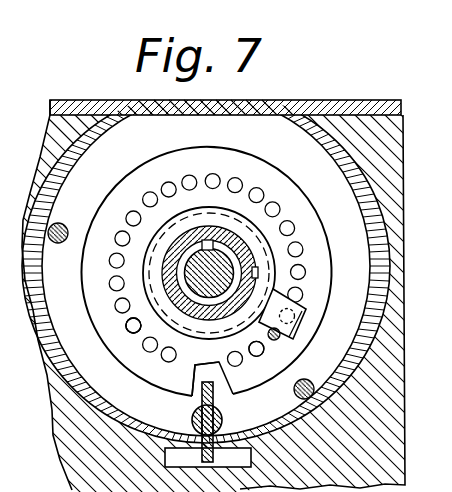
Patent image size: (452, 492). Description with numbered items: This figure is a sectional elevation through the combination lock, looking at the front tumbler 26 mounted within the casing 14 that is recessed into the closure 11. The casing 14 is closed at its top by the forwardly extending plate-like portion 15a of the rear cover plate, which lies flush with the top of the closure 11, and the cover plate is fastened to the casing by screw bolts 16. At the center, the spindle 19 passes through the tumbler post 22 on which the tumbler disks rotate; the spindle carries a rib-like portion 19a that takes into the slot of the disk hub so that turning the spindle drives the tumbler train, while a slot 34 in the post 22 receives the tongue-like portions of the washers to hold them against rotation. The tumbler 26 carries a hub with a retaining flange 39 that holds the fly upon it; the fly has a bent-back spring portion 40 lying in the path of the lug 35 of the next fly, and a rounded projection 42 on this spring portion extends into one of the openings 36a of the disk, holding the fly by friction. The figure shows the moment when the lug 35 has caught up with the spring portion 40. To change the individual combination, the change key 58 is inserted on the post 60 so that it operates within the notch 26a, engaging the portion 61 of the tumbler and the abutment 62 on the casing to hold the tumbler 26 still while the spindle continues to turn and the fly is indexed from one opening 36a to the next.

The closure 11 is at (53, 132).
The casing 14 is at (329, 147).
The plate-like portion 15a is at (299, 117).
The screw bolts 16 is at (60, 224).
The spindle 19 is at (197, 271).
The rib-like portion 19a is at (208, 240).
The tumbler post 22 is at (135, 334).
The front tumbler 26 is at (143, 170).
The notch 26a is at (211, 372).
The slot 34 is at (259, 270).
The lug 35 is at (252, 364).
The openings 36a is at (128, 334).
The retaining flange 39 is at (270, 245).
The spring portion 40 is at (274, 340).
The rounded projection 42 is at (307, 302).
The change key 58 is at (222, 418).
The post 60 is at (201, 413).
The portion of the tumbler 61 is at (194, 372).
The abutment 62 is at (184, 437).